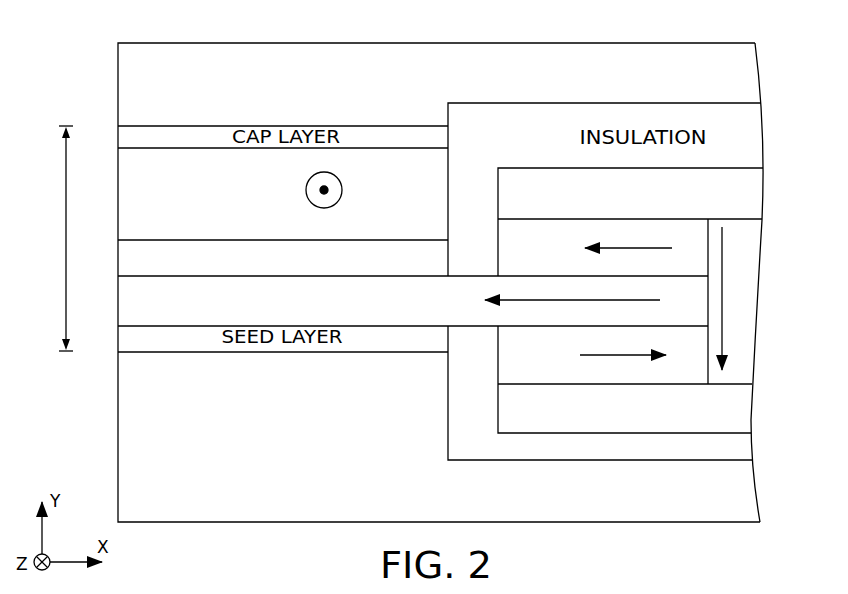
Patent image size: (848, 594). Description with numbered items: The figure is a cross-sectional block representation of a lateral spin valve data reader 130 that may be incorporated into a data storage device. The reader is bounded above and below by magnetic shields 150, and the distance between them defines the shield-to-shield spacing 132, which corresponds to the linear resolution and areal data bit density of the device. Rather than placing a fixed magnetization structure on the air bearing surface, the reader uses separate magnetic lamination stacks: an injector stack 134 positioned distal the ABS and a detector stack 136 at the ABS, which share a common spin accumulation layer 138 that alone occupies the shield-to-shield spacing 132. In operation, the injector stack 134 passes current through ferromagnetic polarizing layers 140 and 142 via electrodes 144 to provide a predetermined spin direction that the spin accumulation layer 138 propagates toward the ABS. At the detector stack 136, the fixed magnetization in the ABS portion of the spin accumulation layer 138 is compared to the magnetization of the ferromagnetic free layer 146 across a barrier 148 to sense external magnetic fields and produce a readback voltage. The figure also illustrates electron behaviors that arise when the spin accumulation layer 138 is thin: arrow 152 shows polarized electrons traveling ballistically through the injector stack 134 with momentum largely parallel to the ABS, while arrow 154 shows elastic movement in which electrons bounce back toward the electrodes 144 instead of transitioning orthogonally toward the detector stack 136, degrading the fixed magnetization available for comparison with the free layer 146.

The data reader 130 is at (122, 27).
The shield-to-shield spacing 132 is at (66, 170).
The injector stack 134 is at (502, 165).
The detector stack 136 is at (130, 360).
The spin accumulation layer 138 is at (704, 311).
The ferromagnetic polarizing layer 140 is at (538, 259).
The ferromagnetic polarizing layer 142 is at (538, 366).
The electrode 144 is at (538, 203).
The free layer 146 is at (441, 203).
The barrier 148 is at (441, 271).
The magnetic shield 150 is at (751, 84).
The arrow 152 is at (723, 318).
The arrow 154 is at (615, 300).